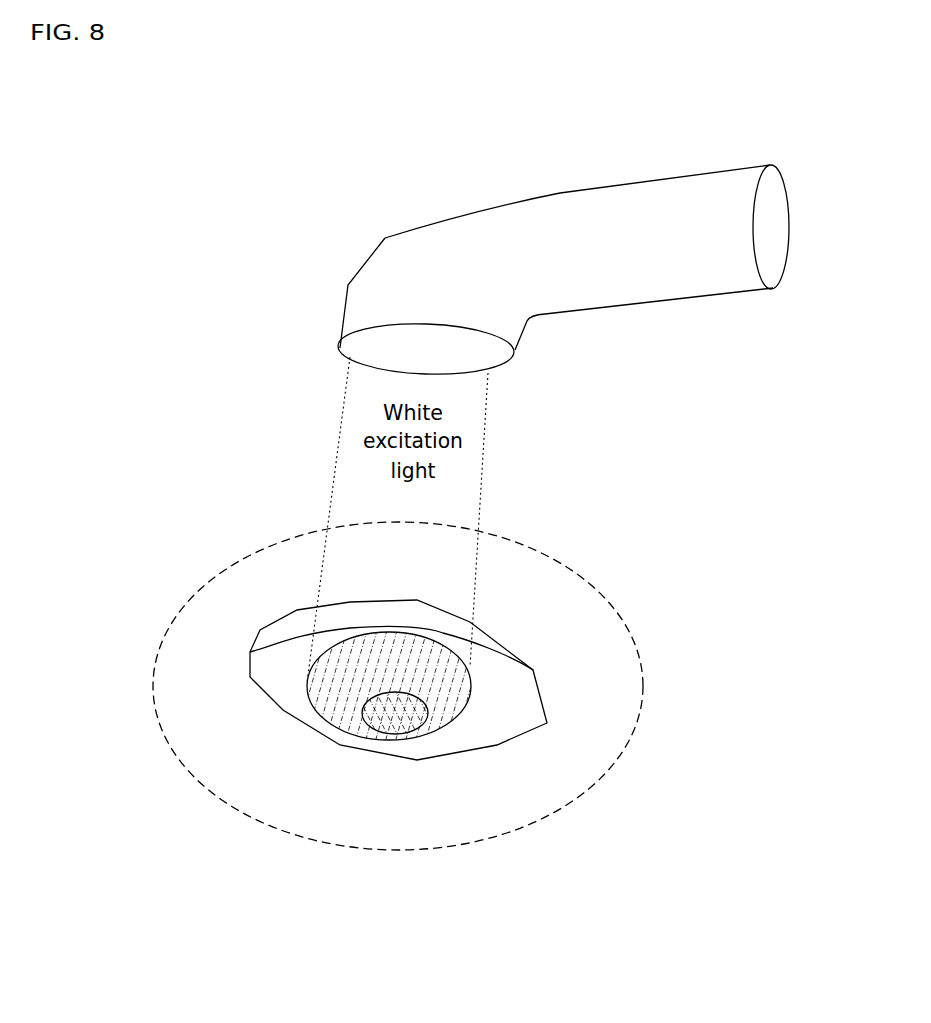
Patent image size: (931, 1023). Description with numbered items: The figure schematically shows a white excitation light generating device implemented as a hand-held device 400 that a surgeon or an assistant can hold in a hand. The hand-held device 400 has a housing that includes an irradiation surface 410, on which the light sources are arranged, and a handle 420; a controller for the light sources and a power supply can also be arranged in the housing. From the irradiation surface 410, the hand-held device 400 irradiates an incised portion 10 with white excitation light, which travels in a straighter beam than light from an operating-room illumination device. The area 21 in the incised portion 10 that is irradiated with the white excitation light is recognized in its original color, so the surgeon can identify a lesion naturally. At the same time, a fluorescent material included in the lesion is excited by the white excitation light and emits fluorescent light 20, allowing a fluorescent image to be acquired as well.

The hand-held device 400 is at (563, 278).
The irradiation surface 410 is at (490, 353).
The handle 420 is at (617, 200).
The incised portion 10 is at (273, 662).
The area 21 is at (340, 713).
The fluorescent light 20 is at (400, 727).